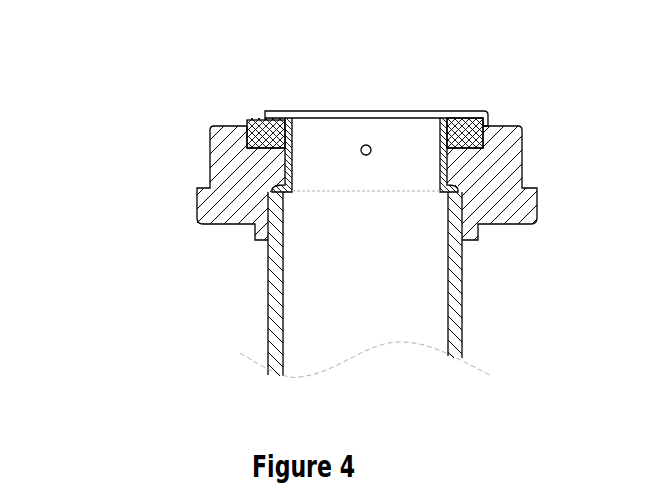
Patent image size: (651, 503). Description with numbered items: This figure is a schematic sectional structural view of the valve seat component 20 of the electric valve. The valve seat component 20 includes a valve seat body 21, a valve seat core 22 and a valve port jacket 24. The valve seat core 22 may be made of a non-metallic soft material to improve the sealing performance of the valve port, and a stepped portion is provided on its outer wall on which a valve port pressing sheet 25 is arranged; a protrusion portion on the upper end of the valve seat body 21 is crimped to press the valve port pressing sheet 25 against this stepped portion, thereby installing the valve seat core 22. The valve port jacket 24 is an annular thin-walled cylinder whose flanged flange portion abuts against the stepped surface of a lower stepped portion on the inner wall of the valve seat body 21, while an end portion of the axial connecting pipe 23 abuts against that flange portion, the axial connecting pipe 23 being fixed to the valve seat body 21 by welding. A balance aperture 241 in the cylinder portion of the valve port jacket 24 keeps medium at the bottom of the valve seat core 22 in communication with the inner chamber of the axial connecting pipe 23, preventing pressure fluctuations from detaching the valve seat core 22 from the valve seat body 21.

The valve seat component 20 is at (156, 184).
The valve seat body 21 is at (213, 144).
The valve seat core 22 is at (478, 107).
The axial connecting pipe 23 is at (258, 323).
The valve port jacket 24 is at (429, 114).
The valve port pressing sheet 25 is at (251, 100).
The balance aperture 241 is at (351, 124).